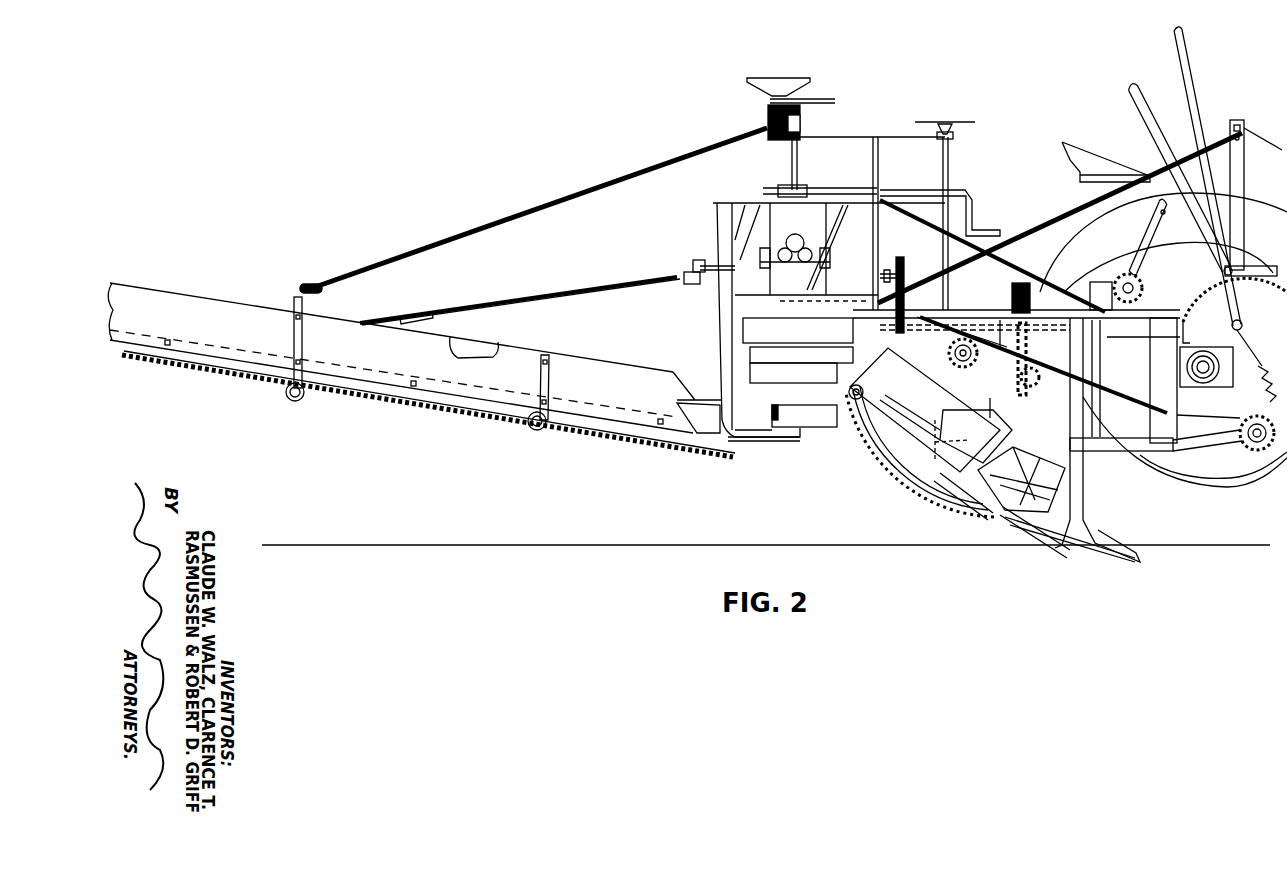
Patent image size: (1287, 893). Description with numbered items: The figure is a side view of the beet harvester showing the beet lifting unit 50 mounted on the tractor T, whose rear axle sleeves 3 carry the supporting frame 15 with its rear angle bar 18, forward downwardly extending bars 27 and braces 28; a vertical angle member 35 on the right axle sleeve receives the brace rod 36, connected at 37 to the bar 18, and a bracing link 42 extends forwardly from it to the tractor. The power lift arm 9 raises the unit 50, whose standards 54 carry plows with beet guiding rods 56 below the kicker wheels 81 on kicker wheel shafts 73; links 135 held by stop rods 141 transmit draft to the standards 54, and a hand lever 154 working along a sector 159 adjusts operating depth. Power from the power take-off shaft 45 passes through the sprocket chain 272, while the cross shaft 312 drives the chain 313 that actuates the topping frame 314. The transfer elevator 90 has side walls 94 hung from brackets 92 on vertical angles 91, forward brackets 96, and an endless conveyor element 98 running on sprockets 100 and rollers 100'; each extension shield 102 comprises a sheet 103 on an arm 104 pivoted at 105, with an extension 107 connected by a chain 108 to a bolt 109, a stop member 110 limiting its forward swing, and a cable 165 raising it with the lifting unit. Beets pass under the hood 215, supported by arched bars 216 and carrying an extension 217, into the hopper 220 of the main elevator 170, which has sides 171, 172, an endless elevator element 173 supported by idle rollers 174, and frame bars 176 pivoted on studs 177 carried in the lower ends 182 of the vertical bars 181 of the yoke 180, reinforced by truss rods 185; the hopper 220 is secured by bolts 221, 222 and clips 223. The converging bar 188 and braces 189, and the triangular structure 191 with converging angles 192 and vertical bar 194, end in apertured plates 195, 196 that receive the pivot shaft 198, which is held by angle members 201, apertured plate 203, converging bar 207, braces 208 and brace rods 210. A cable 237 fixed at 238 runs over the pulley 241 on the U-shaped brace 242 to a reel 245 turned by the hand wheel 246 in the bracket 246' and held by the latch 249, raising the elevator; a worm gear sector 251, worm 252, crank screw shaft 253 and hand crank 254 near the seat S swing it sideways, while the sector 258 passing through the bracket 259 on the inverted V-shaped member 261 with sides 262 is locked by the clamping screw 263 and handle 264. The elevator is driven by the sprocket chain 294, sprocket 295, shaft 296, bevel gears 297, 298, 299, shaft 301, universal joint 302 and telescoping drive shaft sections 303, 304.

The main elevator 170 is at (212, 281).
The side 171 is at (472, 341).
The side 172 is at (521, 362).
The endless elevator element 173 is at (424, 416).
The idle rollers 174 is at (295, 401).
The longitudinally extending frame bars 176 is at (593, 400).
The studs 177 is at (791, 445).
The yoke 180 is at (697, 229).
The vertical bars 181 is at (720, 304).
The lower ends 182 is at (755, 445).
The truss rods 185 is at (722, 338).
The forwardly converging bar 188 is at (721, 190).
The braces 189 is at (742, 200).
The triangular structure 191 is at (735, 266).
The forwardly converging angles 192 is at (693, 265).
The vertical bar 194 is at (836, 200).
The apertured plate 195 is at (811, 188).
The second apertured plate 196 is at (820, 289).
The pivot shaft 198 is at (740, 235).
The rearwardly converging angle members 201 is at (805, 330).
The apertured plate 203 is at (793, 373).
The rearwardly converging bar 207 is at (876, 200).
The downwardly and rearwardly converging braces 208 is at (885, 238).
The brace rods 210 is at (930, 185).
The hood 215 is at (738, 360).
The arched bars 216 is at (798, 330).
The extension 217 is at (753, 408).
The hopper 220 is at (700, 441).
The bolts 221 is at (700, 404).
The bolts 222 is at (790, 405).
The clips 223 is at (785, 420).
The cable 237 is at (683, 153).
The cable fixing point 238 is at (767, 120).
The pulley 241 is at (312, 284).
The U-shaped brace 242 is at (292, 330).
The reel 245 is at (765, 108).
The hand wheel 246 is at (778, 68).
The bracket 246' is at (824, 119).
The ratchet hand-operated latch 249 is at (821, 97).
The worm gear sector 251 is at (770, 185).
The worm 252 is at (787, 177).
The crank screw shaft 253 is at (850, 188).
The hand crank 254 is at (972, 208).
The sector 258 is at (880, 135).
The bracket 259 is at (955, 135).
The inverted V-shaped member 261 is at (963, 161).
The sides 262 is at (948, 178).
The clamping screw 263 is at (943, 120).
The operating handle 264 is at (969, 118).
The sprocket chain 272 is at (1098, 440).
The sprocket chain 294 is at (950, 300).
The sprocket 295 is at (905, 266).
The longitudinally extending shaft 296 is at (877, 262).
The bevel gear 297 is at (830, 240).
The second bevel gear 298 is at (720, 210).
The third bevel gear 299 is at (718, 319).
The shaft 301 is at (735, 248).
The universal joint 302 is at (690, 284).
The drive shaft section 303 is at (452, 302).
The drive shaft section 304 is at (386, 313).
The brace rod 36 is at (1060, 220).
The connection 37 is at (839, 327).
The bracing link 42 is at (1262, 128).
The vertical angle member 35 is at (1244, 166).
The tractor seat S is at (1082, 158).
The tractor T is at (1189, 287).
The hand lever 154 is at (1143, 246).
The sector 159 is at (1120, 272).
The power lift arm 9 is at (1102, 295).
The supporting frame 15 is at (1050, 310).
The stop rods 141 is at (1115, 362).
The rear axle sleeves 3 is at (1210, 352).
The downwardly extending bars 27 is at (1172, 392).
The braces 28 is at (1176, 417).
The vertically shiftable links 135 is at (1140, 470).
The standards 54 is at (1095, 482).
The power take-off shaft 45 is at (1140, 448).
The topping frame 314 is at (1232, 442).
The chain 313 is at (1255, 452).
The cross shaft 312 is at (1242, 452).
The bolt 109 is at (967, 338).
The rear angle bar 18 is at (908, 280).
The vertical angles 91 is at (905, 200).
The extension 107 is at (935, 490).
The stop member 110 is at (886, 464).
The endless conveyor element 98 is at (900, 480).
The bracket 92 is at (882, 378).
The chain 108 is at (887, 399).
The sprockets 100 is at (833, 423).
The rollers 100' is at (983, 548).
The side walls 94 is at (866, 420).
The transfer elevator 90 is at (876, 445).
The extension shield 102 is at (964, 395).
The sheet 103 is at (970, 410).
The arm 104 is at (970, 455).
The cable 165 is at (996, 415).
The kicker wheel shaft 73 is at (1006, 448).
The pivot 105 is at (945, 498).
The forward bracket 96 is at (975, 515).
The beet guiding rod 56 is at (1030, 517).
The kicker wheel 81 is at (1035, 520).
The beet lifting unit 50 is at (1072, 541).